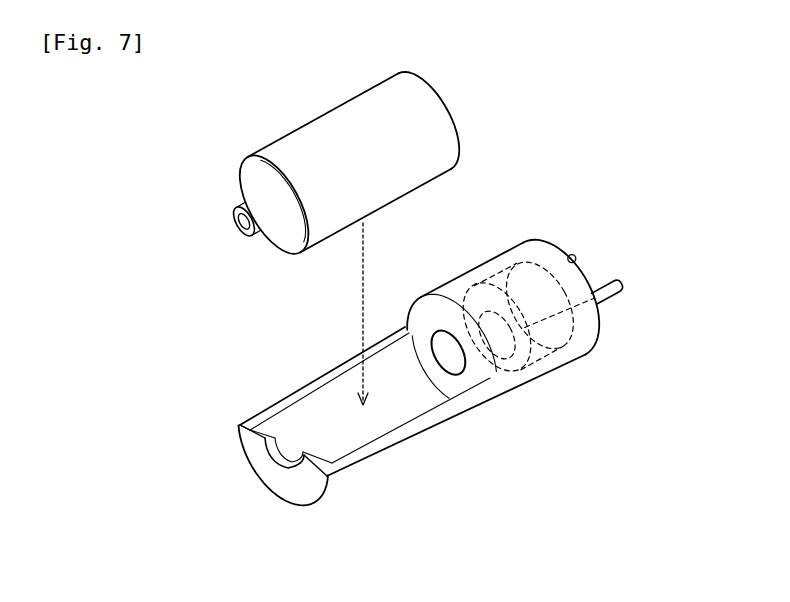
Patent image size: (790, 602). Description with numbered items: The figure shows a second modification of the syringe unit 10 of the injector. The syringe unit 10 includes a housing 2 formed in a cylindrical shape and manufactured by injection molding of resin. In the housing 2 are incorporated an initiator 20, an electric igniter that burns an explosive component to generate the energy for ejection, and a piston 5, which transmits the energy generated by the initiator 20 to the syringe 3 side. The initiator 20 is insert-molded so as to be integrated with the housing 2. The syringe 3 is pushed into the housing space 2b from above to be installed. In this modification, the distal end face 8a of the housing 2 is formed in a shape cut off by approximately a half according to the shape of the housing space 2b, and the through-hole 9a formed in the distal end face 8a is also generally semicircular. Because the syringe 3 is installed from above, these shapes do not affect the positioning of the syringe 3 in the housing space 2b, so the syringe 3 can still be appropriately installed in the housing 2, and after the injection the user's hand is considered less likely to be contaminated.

The housing 2 is at (395, 405).
The housing space 2b is at (335, 392).
The syringe 3 is at (320, 123).
The piston 5 is at (489, 333).
The distal end face 8a is at (303, 495).
The through-hole 9a is at (288, 455).
The syringe unit 10 is at (636, 512).
The initiator 20 is at (542, 338).